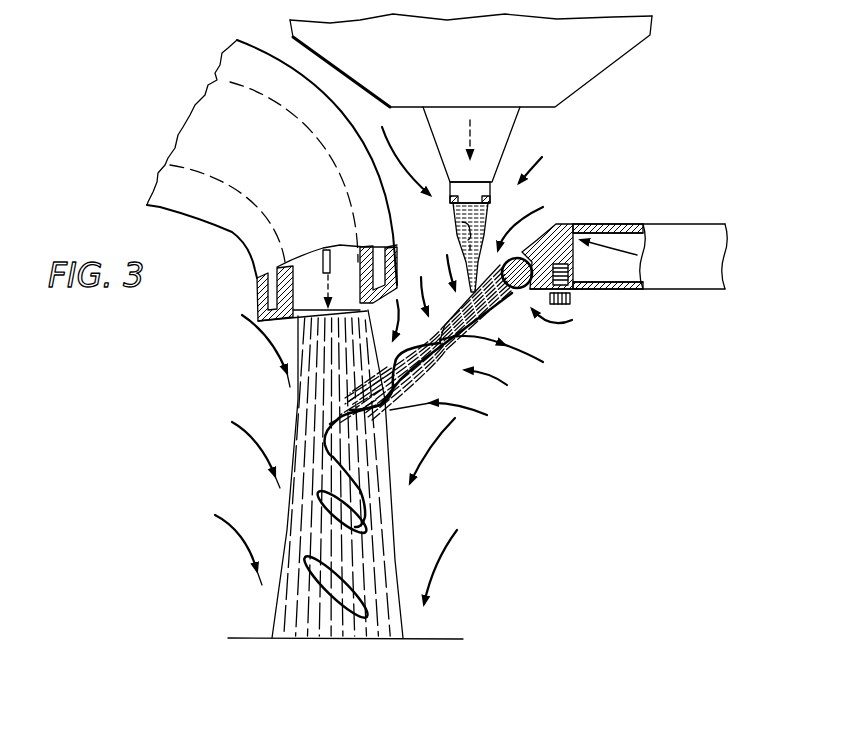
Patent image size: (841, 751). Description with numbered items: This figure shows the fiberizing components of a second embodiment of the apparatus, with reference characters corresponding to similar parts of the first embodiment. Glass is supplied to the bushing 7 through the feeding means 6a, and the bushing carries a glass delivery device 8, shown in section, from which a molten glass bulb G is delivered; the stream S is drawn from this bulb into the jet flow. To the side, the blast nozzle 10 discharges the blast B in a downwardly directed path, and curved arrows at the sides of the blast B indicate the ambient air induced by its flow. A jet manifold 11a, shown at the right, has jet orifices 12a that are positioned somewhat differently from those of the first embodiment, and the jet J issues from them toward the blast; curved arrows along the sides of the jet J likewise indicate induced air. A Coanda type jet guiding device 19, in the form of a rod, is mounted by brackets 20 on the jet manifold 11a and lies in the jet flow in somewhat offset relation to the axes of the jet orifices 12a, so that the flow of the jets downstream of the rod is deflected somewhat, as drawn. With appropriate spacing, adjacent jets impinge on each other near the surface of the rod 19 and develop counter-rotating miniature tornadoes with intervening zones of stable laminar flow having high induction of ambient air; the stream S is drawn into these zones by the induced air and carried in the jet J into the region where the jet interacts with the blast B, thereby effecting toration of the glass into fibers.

The feeding means 6a is at (607, 53).
The bushing 7 is at (500, 133).
The glass delivery device 8 is at (496, 205).
The blast nozzle 10 is at (202, 108).
The jet manifold 11a is at (693, 282).
The jet orifices 12a is at (558, 224).
The Coanda type jet guiding device 19 is at (518, 257).
The brackets 20 is at (574, 296).
The molten glass bulb G is at (468, 220).
The blast B is at (296, 437).
The stream S is at (440, 348).
The jet J is at (410, 372).